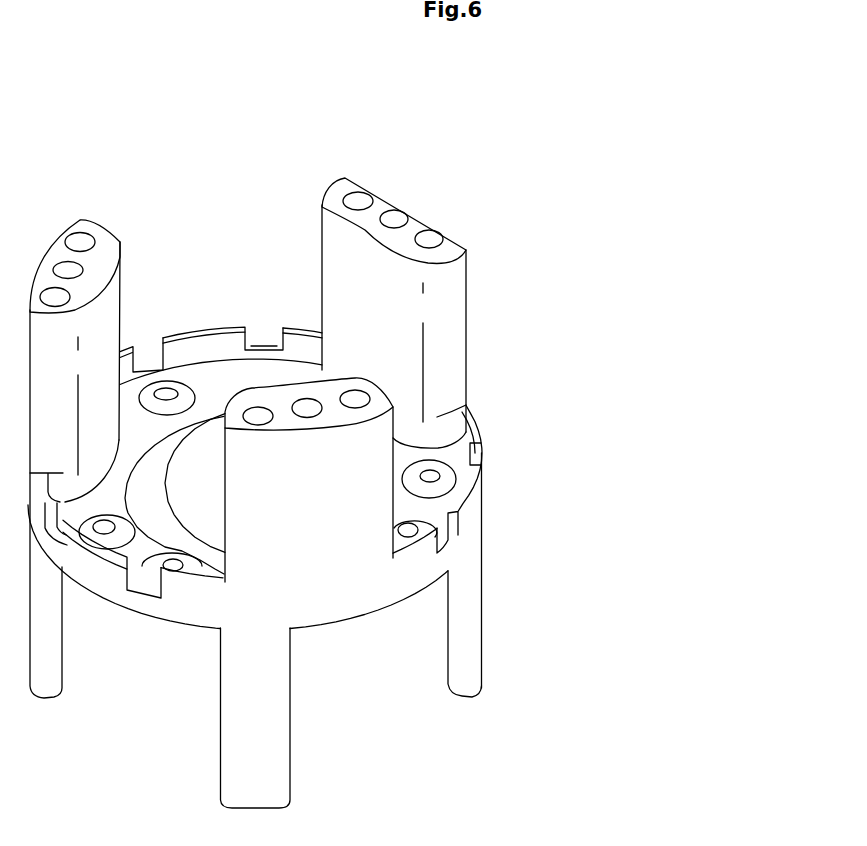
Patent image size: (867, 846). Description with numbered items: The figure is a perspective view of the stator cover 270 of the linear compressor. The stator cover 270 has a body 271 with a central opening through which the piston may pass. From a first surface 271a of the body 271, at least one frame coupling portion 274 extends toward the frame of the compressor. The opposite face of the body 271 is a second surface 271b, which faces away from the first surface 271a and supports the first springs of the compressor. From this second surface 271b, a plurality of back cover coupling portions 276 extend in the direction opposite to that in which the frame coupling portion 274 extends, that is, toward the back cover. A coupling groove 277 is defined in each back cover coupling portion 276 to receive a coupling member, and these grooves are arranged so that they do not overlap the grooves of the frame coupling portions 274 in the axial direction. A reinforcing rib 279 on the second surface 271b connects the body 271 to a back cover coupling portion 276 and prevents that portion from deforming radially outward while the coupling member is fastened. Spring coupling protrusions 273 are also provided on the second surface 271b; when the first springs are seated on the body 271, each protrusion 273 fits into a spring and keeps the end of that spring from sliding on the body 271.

The stator cover 270 is at (186, 148).
The body 271 is at (211, 416).
The first surface 271a is at (125, 558).
The second surface 271b is at (190, 377).
The spring coupling protrusion 273 is at (433, 476).
The frame coupling portion 274 is at (278, 720).
The back cover coupling portion 276 is at (455, 353).
The coupling groove 277 is at (394, 212).
The reinforcing rib 279 is at (182, 588).